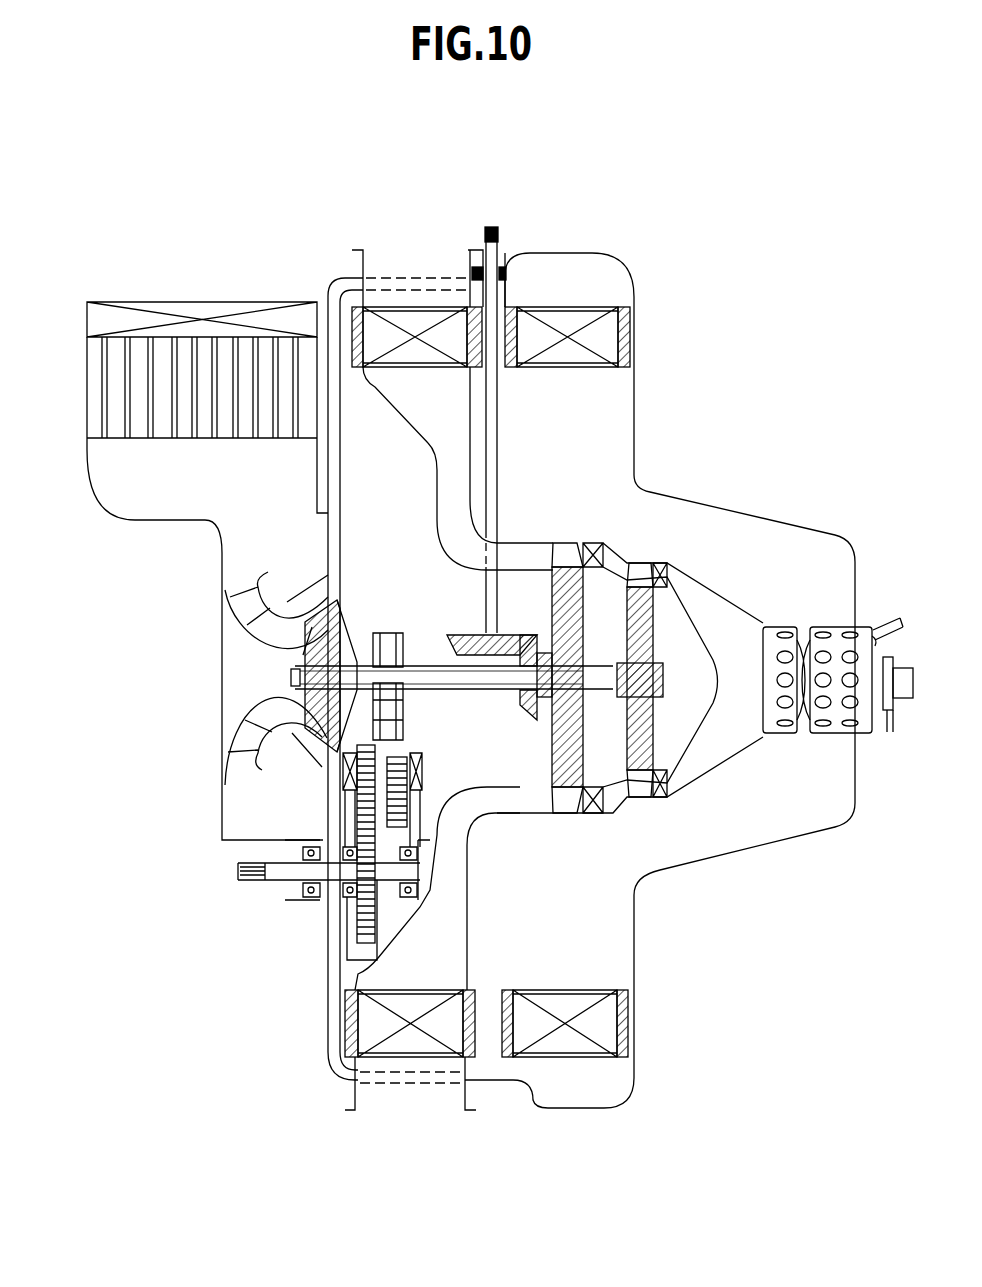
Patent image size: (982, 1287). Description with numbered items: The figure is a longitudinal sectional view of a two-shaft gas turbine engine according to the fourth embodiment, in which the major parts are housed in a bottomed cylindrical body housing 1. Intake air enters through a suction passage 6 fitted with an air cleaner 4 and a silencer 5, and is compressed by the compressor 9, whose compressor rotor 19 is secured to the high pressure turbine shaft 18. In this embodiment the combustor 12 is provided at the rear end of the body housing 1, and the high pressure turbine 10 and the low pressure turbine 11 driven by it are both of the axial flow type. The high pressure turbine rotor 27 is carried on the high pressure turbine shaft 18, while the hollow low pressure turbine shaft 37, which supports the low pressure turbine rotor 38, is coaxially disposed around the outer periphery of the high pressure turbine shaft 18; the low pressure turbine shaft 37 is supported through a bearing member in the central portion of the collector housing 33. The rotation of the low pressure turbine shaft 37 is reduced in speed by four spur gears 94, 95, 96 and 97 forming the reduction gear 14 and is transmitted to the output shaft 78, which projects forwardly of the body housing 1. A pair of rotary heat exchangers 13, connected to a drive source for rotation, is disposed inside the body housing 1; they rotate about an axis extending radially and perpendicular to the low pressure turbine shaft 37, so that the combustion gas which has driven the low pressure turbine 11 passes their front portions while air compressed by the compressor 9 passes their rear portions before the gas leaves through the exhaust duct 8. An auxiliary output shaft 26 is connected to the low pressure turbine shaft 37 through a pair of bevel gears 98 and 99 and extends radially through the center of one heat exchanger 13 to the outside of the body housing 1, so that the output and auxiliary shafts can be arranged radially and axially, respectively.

The body housing 1 is at (333, 293).
The air cleaner 4 is at (87, 318).
The silencer 5 is at (87, 365).
The suction passage 6 is at (140, 518).
The exhaust duct 8 is at (367, 254).
The centrifugal compressor 9 is at (313, 607).
The high pressure turbine 10 is at (652, 558).
The low pressure turbine 11 is at (568, 530).
The combustor 12 is at (787, 622).
The heat exchangers 13 is at (570, 372).
The reduction gear 14 is at (431, 782).
The high pressure turbine shaft 18 is at (463, 680).
The compressor rotor 19 is at (305, 728).
The auxiliary output shaft 26 is at (500, 233).
The high pressure turbine rotor 27 is at (637, 570).
The collector housing 33 is at (417, 443).
The low pressure turbine shaft 37 is at (430, 664).
The low pressure turbine rotor 38 is at (548, 557).
The output shaft 78 is at (248, 880).
The spur gear 94 is at (387, 632).
The spur gear 95 is at (400, 810).
The spur gear 96 is at (358, 792).
The spur gear 97 is at (360, 927).
The bevel gear 98 is at (530, 700).
The bevel gear 99 is at (460, 635).